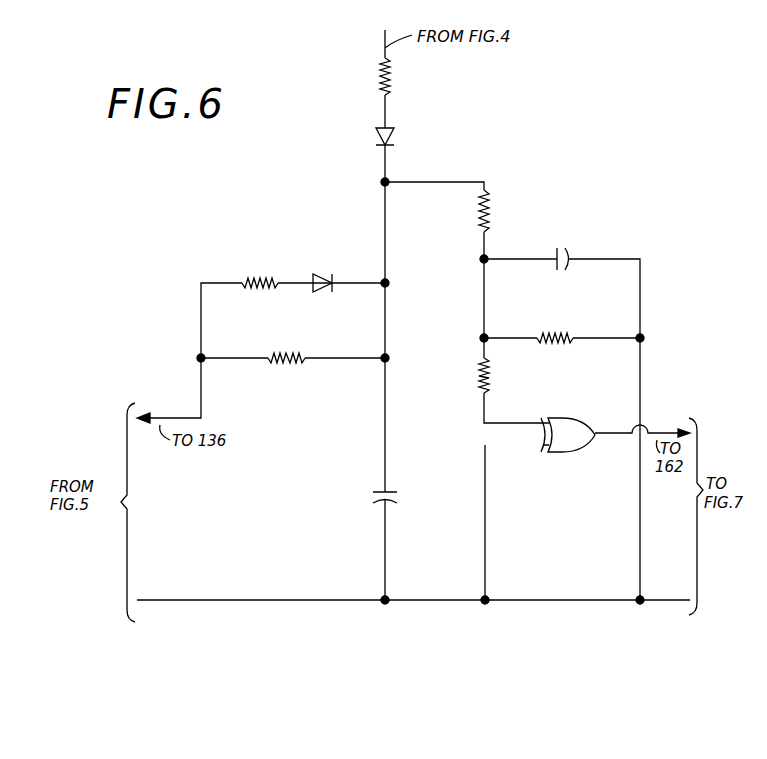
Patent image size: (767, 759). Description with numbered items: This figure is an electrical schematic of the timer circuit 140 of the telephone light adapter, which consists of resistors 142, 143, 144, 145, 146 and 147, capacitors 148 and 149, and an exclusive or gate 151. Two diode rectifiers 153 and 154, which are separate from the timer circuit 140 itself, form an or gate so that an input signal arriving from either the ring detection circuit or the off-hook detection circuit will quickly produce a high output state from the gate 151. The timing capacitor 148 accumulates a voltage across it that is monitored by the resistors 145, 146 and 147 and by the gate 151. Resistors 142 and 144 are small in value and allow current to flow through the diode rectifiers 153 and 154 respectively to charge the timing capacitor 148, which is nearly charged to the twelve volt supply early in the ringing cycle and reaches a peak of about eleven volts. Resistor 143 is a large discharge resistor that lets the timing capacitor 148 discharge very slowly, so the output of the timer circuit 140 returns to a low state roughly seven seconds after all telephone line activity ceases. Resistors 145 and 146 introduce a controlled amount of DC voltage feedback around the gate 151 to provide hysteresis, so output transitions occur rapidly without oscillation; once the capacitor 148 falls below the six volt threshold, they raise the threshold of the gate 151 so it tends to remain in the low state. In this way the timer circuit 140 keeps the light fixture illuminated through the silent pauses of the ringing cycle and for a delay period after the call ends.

The timer circuit 140 is at (556, 133).
The resistor 142 is at (252, 289).
The discharge resistor 143 is at (280, 364).
The resistor 144 is at (390, 78).
The resistor 145 is at (489, 207).
The resistor 146 is at (558, 343).
The resistor 147 is at (479, 390).
The timing capacitor 148 is at (390, 492).
The capacitor 149 is at (571, 257).
The exclusive or gate 151 is at (565, 452).
The diode rectifier 153 is at (318, 292).
The diode rectifier 154 is at (395, 141).